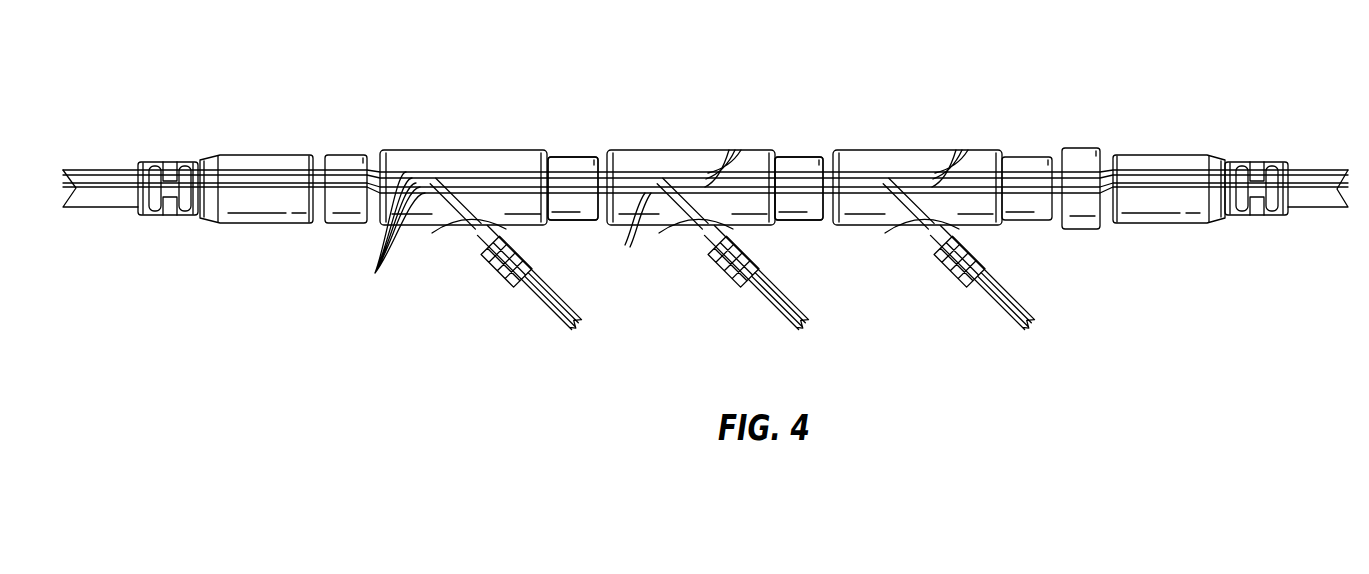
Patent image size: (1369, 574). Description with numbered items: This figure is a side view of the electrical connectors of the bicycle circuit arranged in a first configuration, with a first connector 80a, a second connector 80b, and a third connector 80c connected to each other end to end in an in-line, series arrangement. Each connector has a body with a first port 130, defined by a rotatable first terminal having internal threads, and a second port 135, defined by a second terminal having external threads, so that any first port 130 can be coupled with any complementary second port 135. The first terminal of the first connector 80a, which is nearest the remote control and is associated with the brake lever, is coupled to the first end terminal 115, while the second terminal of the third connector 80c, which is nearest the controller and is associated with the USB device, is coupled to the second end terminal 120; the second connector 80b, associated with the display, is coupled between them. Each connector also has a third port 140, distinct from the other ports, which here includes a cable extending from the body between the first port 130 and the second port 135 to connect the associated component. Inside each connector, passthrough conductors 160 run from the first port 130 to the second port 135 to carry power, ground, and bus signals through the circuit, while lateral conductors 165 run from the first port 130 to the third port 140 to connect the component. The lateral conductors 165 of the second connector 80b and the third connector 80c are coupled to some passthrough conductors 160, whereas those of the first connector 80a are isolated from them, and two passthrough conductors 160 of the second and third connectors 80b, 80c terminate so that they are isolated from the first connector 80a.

The first connector 80a is at (893, 150).
The second connector 80b is at (667, 150).
The third connector 80c is at (439, 150).
The first end terminal 115 is at (1027, 155).
The second end terminal 120 is at (347, 153).
The first port 130 is at (829, 153).
The second port 135 is at (565, 154).
The third port 140 is at (507, 233).
The passthrough conductors 160 is at (729, 150).
The lateral conductors 165 is at (466, 232).